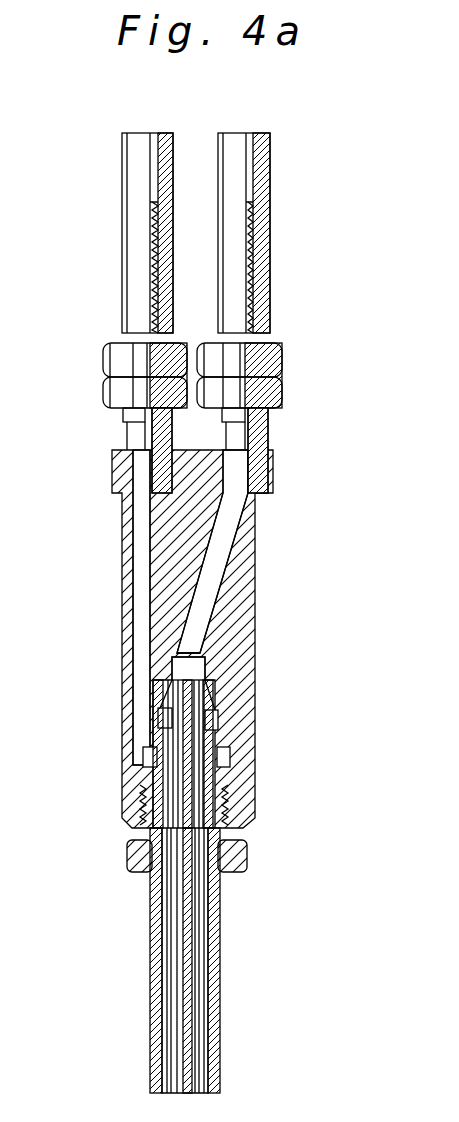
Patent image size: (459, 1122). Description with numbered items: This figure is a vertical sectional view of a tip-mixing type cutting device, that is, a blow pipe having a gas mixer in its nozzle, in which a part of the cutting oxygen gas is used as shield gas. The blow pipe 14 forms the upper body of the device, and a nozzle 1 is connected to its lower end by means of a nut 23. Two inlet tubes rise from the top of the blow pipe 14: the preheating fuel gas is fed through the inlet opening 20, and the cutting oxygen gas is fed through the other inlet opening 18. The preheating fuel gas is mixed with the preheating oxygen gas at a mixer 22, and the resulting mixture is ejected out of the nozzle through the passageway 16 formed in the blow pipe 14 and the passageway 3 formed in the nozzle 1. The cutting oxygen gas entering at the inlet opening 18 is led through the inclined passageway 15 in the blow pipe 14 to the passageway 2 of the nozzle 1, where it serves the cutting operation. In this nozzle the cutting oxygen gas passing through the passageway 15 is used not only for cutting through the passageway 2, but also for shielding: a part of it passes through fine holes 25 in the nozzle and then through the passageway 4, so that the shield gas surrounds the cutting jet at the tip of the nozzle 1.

The nozzle 1 is at (220, 1008).
The passageway 2 is at (185, 790).
The passageway 3 is at (205, 917).
The passageway 4 is at (187, 970).
The blow pipe 14 is at (120, 618).
The passageway 15 is at (218, 542).
The passageway 16 is at (140, 563).
The inlet opening 18 is at (247, 243).
The inlet opening 20 is at (152, 241).
The mixer 22 is at (160, 778).
The nut 23 is at (130, 852).
The fine holes 25 is at (200, 686).